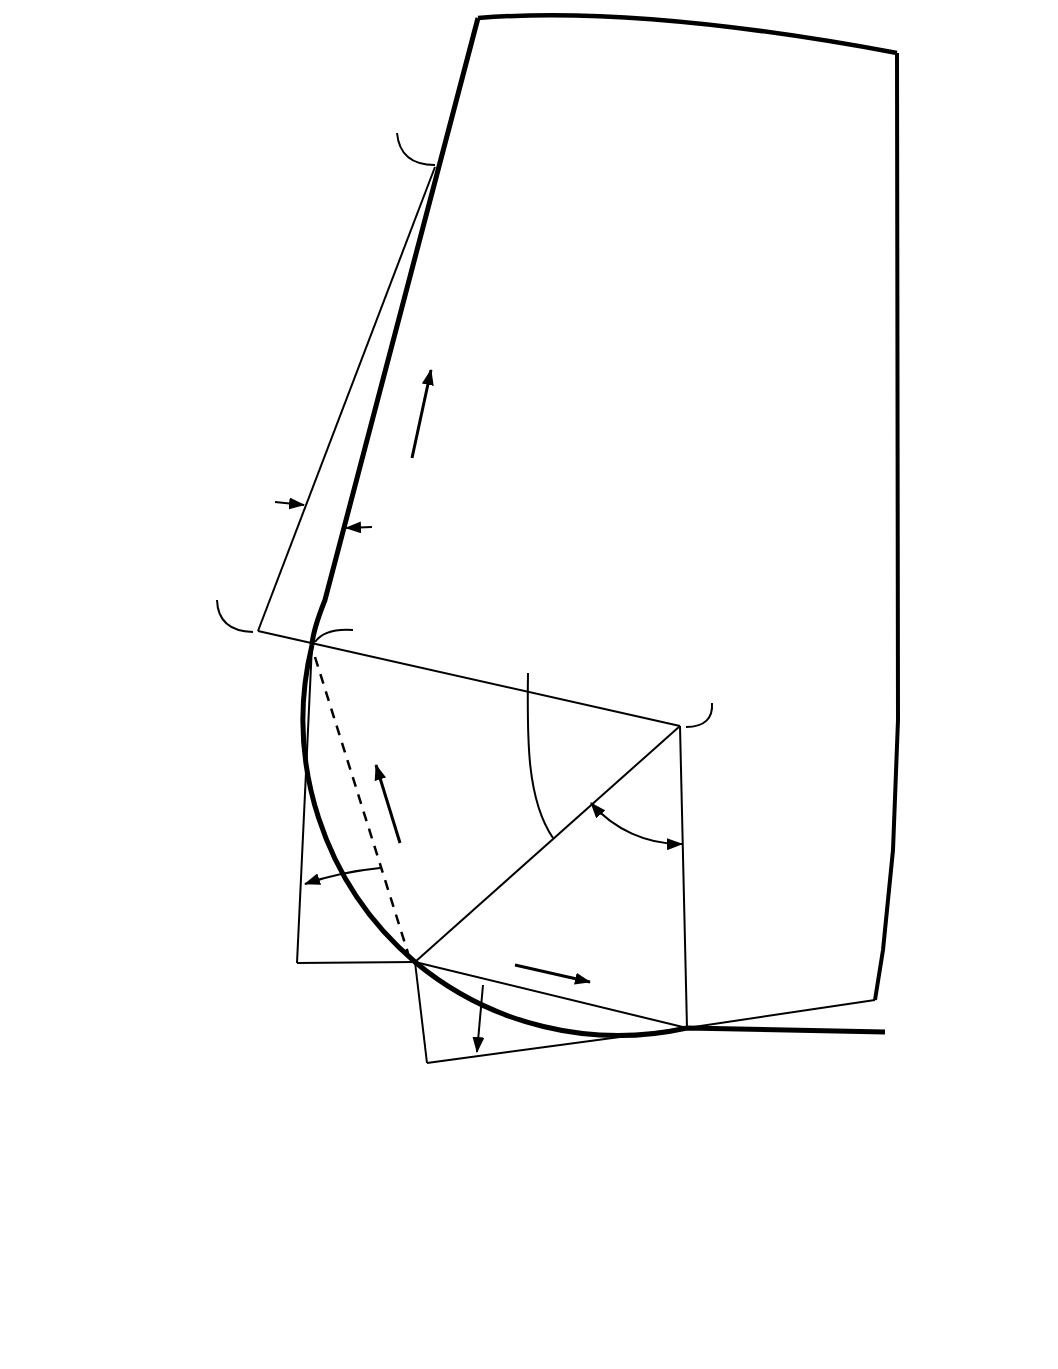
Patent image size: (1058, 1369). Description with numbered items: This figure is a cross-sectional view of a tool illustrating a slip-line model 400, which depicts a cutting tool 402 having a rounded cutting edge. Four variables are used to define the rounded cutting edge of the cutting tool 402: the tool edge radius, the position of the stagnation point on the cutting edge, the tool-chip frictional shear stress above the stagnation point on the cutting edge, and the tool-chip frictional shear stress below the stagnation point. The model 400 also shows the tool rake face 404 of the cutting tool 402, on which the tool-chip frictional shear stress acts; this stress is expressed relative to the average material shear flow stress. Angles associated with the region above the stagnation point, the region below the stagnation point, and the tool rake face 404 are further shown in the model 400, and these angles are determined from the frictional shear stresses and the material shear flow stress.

The model 400 is at (130, 82).
The cutting tool 402 is at (690, 305).
The tool rake face 404 is at (376, 343).